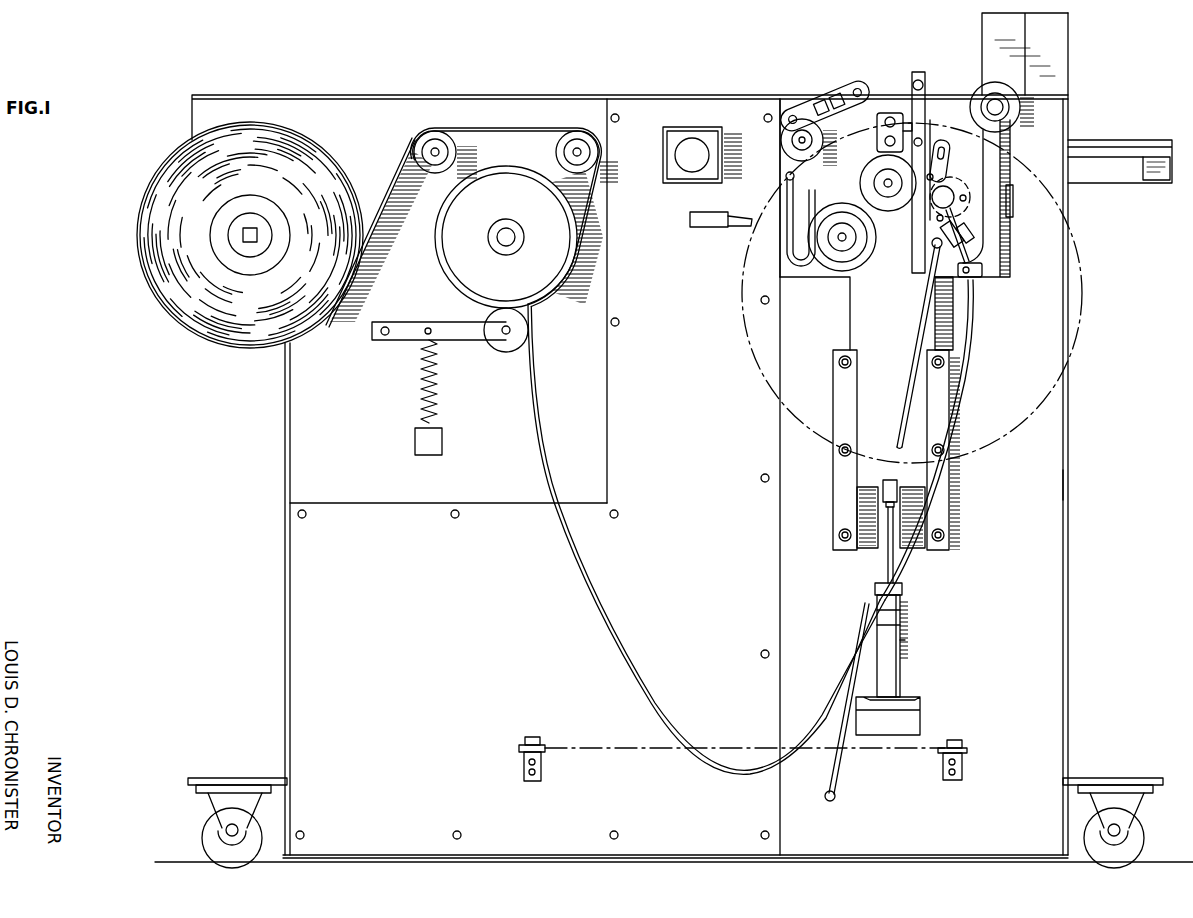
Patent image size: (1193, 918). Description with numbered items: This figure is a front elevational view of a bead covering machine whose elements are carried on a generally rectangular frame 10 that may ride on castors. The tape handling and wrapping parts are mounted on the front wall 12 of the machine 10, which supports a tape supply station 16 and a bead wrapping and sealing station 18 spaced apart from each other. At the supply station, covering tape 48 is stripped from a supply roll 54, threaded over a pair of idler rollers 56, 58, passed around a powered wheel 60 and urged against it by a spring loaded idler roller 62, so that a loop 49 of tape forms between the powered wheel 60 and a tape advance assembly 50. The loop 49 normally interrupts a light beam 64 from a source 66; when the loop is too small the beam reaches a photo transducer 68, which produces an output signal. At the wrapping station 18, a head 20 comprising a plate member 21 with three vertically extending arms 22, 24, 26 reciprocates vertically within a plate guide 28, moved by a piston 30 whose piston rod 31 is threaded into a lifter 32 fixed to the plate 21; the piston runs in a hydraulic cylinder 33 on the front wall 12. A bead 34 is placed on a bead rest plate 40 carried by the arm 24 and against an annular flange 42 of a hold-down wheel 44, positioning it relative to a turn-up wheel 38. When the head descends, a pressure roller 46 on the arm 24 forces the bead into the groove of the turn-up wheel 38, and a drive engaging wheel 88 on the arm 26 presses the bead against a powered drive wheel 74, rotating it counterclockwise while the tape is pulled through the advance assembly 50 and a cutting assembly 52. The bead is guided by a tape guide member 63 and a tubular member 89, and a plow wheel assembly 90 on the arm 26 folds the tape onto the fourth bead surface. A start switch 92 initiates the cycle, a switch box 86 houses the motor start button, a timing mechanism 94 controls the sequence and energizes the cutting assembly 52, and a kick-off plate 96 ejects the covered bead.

The frame 10 is at (1074, 473).
The front wall 12 is at (1066, 600).
The tape supply station 16 is at (299, 486).
The bead wrapping and sealing station 18 is at (1030, 355).
The head 20 is at (831, 355).
The plate member 21 is at (940, 330).
The vertically extending arm 22 is at (985, 279).
The vertically extending arm 24 is at (915, 245).
The vertically extending arm 26 is at (781, 165).
The plate guide 28 is at (951, 510).
The piston 30 is at (903, 612).
The piston rod 31 is at (887, 568).
The lifter 32 is at (883, 482).
The hydraulic cylinder 33 is at (905, 644).
The bead 34 is at (986, 443).
The turn-up wheel 38 is at (886, 212).
The bead rest plate 40 is at (942, 142).
The annular flange 42 is at (1020, 122).
The hold-down wheel 44 is at (978, 88).
The pressure roller 46 is at (921, 80).
The tape 48 is at (396, 180).
The loop 49 is at (725, 770).
The tape advance assembly 50 is at (944, 290).
The cutting assembly 52 is at (952, 185).
The supply roll 54 is at (214, 343).
The idler roller 56 is at (428, 175).
The idler roller 58 is at (587, 135).
The powered wheel 60 is at (580, 250).
The spring loaded idler roller 62 is at (503, 353).
The tape guide member 63 is at (843, 778).
The light beam 64 is at (577, 750).
The source 66 is at (542, 746).
The photo transducer 68 is at (967, 752).
The powered drive wheel 74 is at (839, 272).
The switch box 86 is at (1068, 68).
The drive engaging wheel 88 is at (818, 157).
The tubular member 89 is at (794, 272).
The plow wheel assembly 90 is at (840, 97).
The start switch 92 is at (744, 220).
The timing mechanism 94 is at (690, 125).
The kick-off plate 96 is at (889, 112).